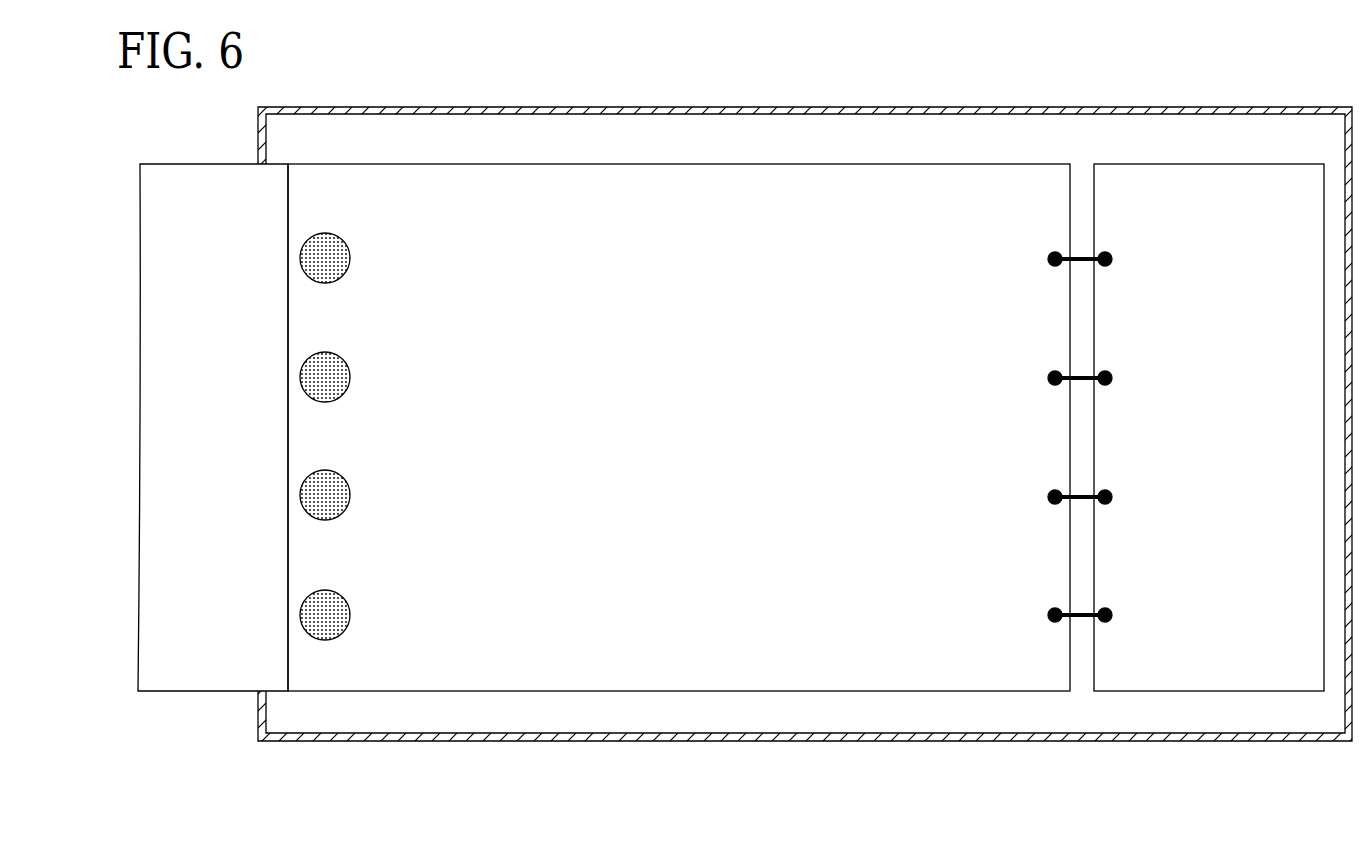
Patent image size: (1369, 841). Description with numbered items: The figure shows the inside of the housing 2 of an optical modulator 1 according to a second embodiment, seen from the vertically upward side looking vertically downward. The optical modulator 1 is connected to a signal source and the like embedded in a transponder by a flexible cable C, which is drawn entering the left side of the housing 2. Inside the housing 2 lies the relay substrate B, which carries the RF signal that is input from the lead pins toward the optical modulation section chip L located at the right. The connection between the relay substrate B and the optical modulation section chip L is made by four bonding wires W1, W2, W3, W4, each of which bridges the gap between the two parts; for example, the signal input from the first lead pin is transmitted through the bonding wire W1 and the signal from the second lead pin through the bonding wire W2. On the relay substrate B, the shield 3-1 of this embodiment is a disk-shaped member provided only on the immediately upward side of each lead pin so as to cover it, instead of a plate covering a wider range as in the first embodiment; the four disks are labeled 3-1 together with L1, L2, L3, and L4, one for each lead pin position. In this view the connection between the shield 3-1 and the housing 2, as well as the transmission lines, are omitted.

The optical modulator 1 is at (745, 387).
The housing 2 is at (565, 107).
The relay substrate B is at (382, 180).
The flexible cable C is at (203, 682).
The optical modulation section chip L is at (1248, 164).
The shield 3-1 is at (392, 422).
The light source 1 L1 is at (345, 603).
The light source 2 L2 is at (345, 483).
The light source 3 L3 is at (345, 365).
The light source 4 L4 is at (345, 246).
The bonding wire W1 is at (1082, 613).
The bonding wire W2 is at (1082, 495).
The bonding wire W3 is at (1082, 376).
The bonding wire W4 is at (1082, 257).